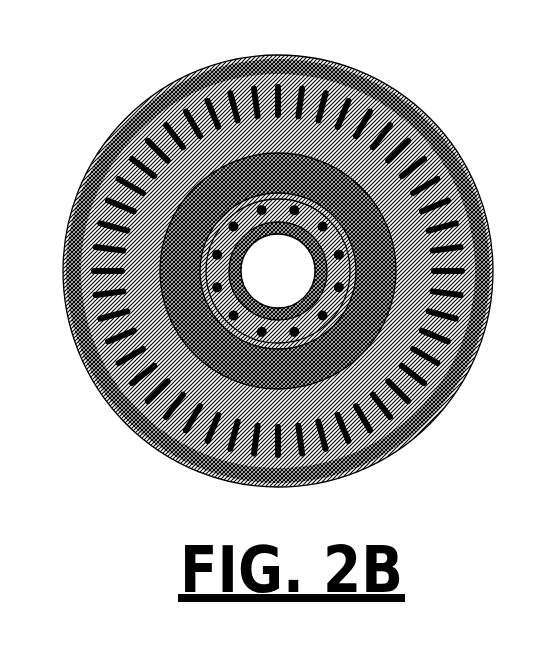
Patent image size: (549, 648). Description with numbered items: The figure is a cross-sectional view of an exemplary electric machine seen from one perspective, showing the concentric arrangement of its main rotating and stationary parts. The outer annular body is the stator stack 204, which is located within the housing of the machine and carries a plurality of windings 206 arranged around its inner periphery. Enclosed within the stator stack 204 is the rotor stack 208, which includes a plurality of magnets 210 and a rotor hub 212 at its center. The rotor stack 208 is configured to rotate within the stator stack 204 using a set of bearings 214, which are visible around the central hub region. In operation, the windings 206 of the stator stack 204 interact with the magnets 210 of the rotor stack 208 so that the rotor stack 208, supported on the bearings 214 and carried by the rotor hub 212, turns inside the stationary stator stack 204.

The stator stack 204 is at (190, 98).
The windings 206 is at (115, 123).
The rotor stack 208 is at (165, 358).
The magnets 210 is at (70, 191).
The rotor hub 212 is at (66, 304).
The bearings 214 is at (68, 245).